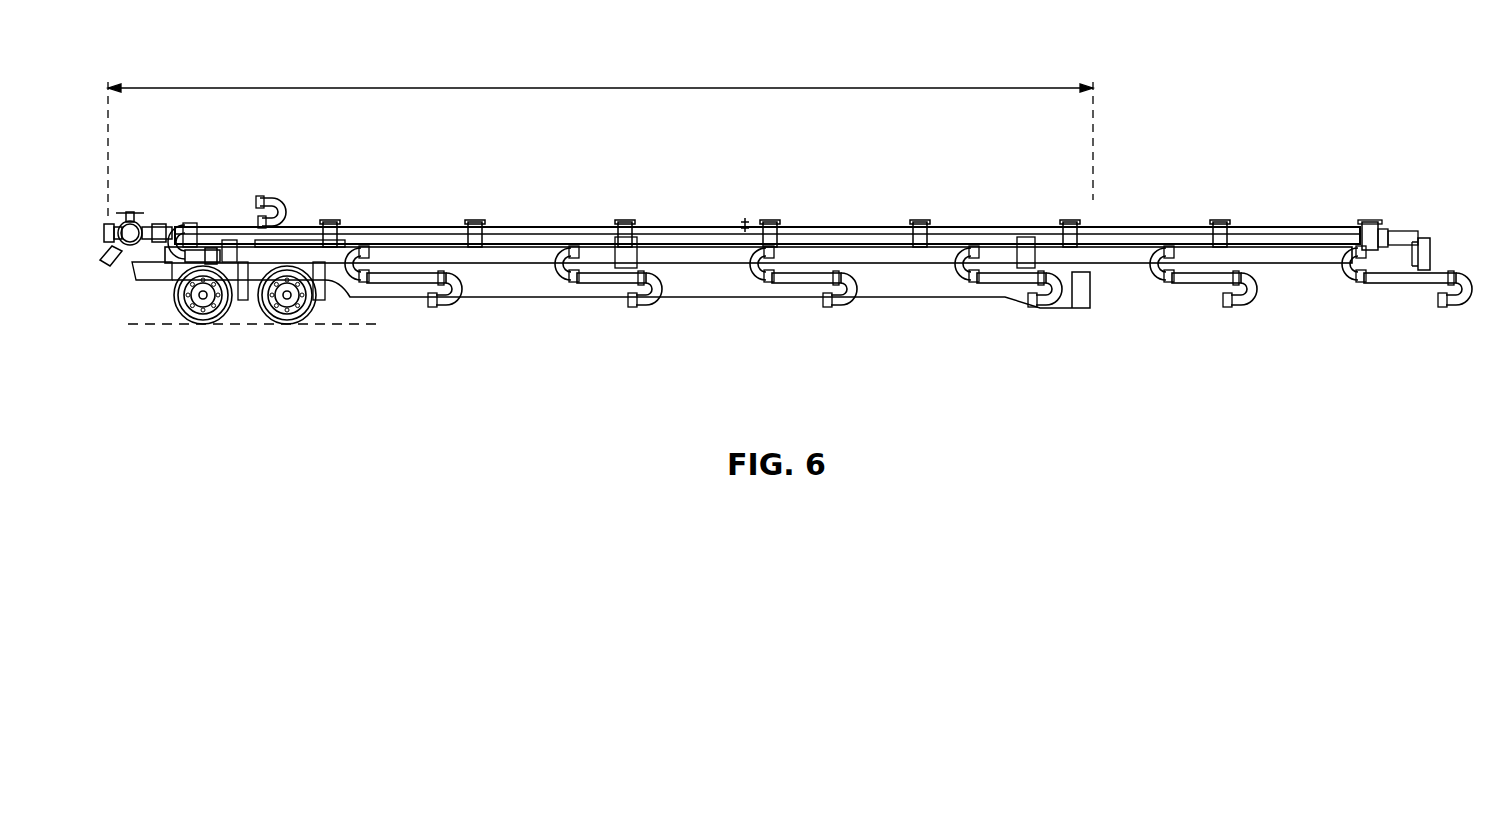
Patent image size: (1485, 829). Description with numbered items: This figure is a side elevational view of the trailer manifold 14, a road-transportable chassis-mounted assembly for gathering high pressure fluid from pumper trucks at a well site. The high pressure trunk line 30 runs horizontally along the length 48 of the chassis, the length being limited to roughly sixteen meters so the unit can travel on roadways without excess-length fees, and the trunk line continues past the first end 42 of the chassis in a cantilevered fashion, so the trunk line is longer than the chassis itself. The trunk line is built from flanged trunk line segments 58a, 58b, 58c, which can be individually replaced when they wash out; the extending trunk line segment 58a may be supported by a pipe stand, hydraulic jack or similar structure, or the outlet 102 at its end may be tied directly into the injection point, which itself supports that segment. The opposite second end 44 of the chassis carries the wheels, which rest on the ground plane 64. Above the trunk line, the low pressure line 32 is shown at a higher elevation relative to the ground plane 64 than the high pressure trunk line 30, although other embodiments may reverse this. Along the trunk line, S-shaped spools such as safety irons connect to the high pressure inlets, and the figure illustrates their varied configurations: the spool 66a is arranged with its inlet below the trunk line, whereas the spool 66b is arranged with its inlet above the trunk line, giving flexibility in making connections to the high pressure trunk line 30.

The trailer manifold 14 is at (1318, 84).
The high pressure trunk line 30 is at (1400, 234).
The low pressure line 32 is at (1283, 228).
The first end 42 is at (1124, 318).
The second end 44 is at (246, 342).
The length 48 is at (612, 88).
The trunk line segment 58a is at (1317, 255).
The trunk line segment 58b is at (707, 253).
The trunk line segment 58c is at (522, 253).
The ground plane 64 is at (185, 325).
The spool 66a is at (1462, 306).
The spool 66b is at (270, 197).
The outlet 102 is at (1427, 236).